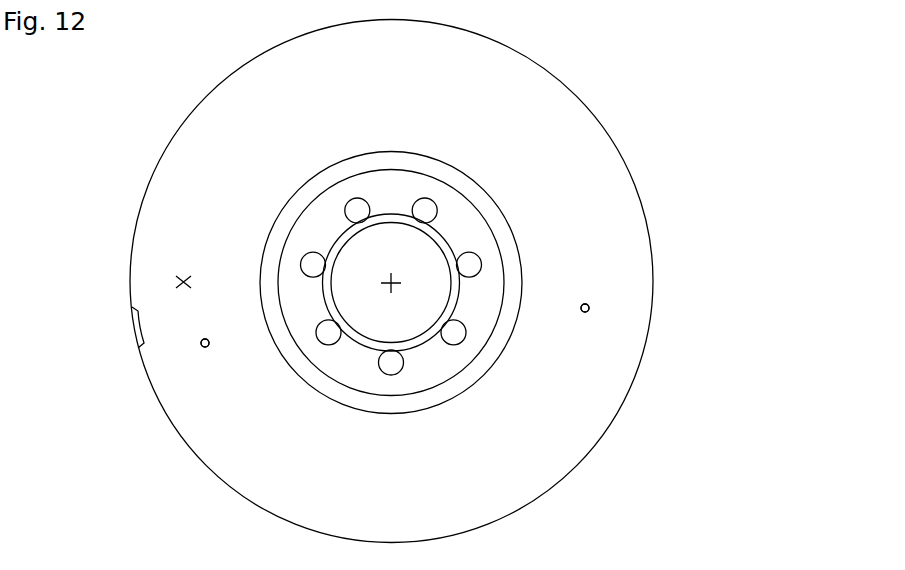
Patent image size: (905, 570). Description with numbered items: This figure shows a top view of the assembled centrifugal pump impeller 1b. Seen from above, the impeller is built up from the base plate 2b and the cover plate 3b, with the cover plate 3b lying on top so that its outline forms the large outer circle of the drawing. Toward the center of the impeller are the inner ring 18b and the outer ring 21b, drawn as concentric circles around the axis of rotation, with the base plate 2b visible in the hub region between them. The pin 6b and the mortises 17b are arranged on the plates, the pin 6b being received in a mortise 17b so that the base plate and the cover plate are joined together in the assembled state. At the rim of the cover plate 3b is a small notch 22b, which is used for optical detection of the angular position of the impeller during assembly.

The centrifugal pump impeller 1b is at (689, 110).
The base plate 2b is at (392, 193).
The cover plate 3b is at (533, 457).
The pin 6b is at (205, 343).
The mortises 17b is at (205, 343).
The inner ring 18b is at (442, 238).
The outer ring 21b is at (347, 392).
The notch 22b is at (133, 325).